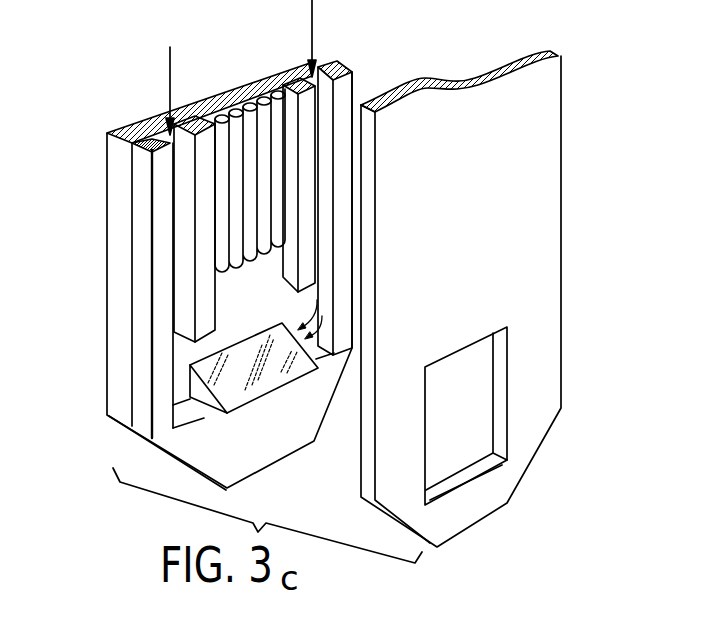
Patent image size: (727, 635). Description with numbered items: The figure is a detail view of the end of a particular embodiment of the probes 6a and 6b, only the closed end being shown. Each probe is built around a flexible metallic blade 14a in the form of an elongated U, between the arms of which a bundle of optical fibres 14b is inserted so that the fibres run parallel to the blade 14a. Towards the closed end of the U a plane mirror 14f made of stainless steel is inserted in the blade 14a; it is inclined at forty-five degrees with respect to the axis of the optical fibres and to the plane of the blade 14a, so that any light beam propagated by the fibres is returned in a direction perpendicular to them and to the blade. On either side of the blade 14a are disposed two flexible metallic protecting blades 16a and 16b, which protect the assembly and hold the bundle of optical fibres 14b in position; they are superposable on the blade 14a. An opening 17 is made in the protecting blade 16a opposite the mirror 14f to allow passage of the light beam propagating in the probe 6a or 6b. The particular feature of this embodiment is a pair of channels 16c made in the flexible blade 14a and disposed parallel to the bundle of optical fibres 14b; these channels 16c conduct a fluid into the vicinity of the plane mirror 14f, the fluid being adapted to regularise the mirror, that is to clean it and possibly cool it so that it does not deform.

The probe 6a is at (106, 126).
The probe 6b is at (320, 294).
The flexible metallic blade 14a is at (146, 316).
The bundle of optical fibres 14b is at (225, 108).
The plane mirror 14f is at (270, 362).
The protecting blade 16a is at (507, 171).
The protecting blade 16b is at (125, 282).
The channel 16c is at (184, 178).
The opening 17 is at (500, 352).